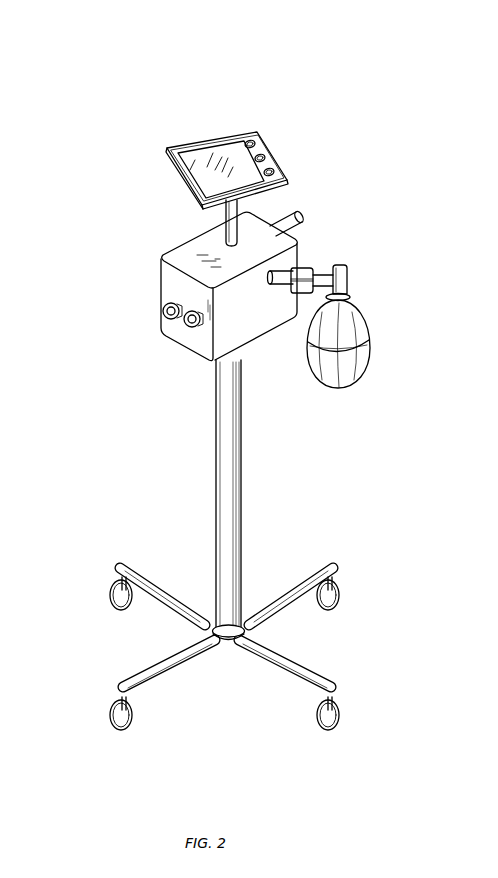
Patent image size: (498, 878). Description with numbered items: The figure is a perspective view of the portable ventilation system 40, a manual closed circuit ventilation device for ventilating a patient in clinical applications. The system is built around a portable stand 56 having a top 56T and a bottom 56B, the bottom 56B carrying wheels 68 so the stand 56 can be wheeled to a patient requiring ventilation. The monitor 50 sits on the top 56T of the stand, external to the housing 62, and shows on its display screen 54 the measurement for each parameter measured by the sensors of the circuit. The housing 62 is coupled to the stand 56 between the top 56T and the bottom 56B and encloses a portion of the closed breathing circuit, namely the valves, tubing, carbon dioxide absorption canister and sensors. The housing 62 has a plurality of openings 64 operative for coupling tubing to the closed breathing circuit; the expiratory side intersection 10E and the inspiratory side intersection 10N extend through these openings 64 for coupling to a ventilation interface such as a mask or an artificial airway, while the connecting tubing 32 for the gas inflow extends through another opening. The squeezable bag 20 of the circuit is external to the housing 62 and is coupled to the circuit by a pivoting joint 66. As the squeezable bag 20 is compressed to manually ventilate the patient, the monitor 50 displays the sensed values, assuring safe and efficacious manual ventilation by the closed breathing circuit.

The portable ventilation system 40 is at (82, 62).
The monitor 50 is at (228, 153).
The display screen 54 is at (190, 160).
The top of the stand 56T is at (248, 198).
The connecting tubing 32 is at (301, 217).
The housing 62 is at (184, 256).
The openings 64 is at (209, 302).
The expiratory side intersection 10E is at (167, 313).
The inspiratory side intersection 10N is at (190, 328).
The pivoting joint 66 is at (309, 268).
The squeezable bag 20 is at (370, 337).
The portable stand 56 is at (223, 541).
The bottom of the stand 56B is at (230, 644).
The wheels 68 is at (343, 590).